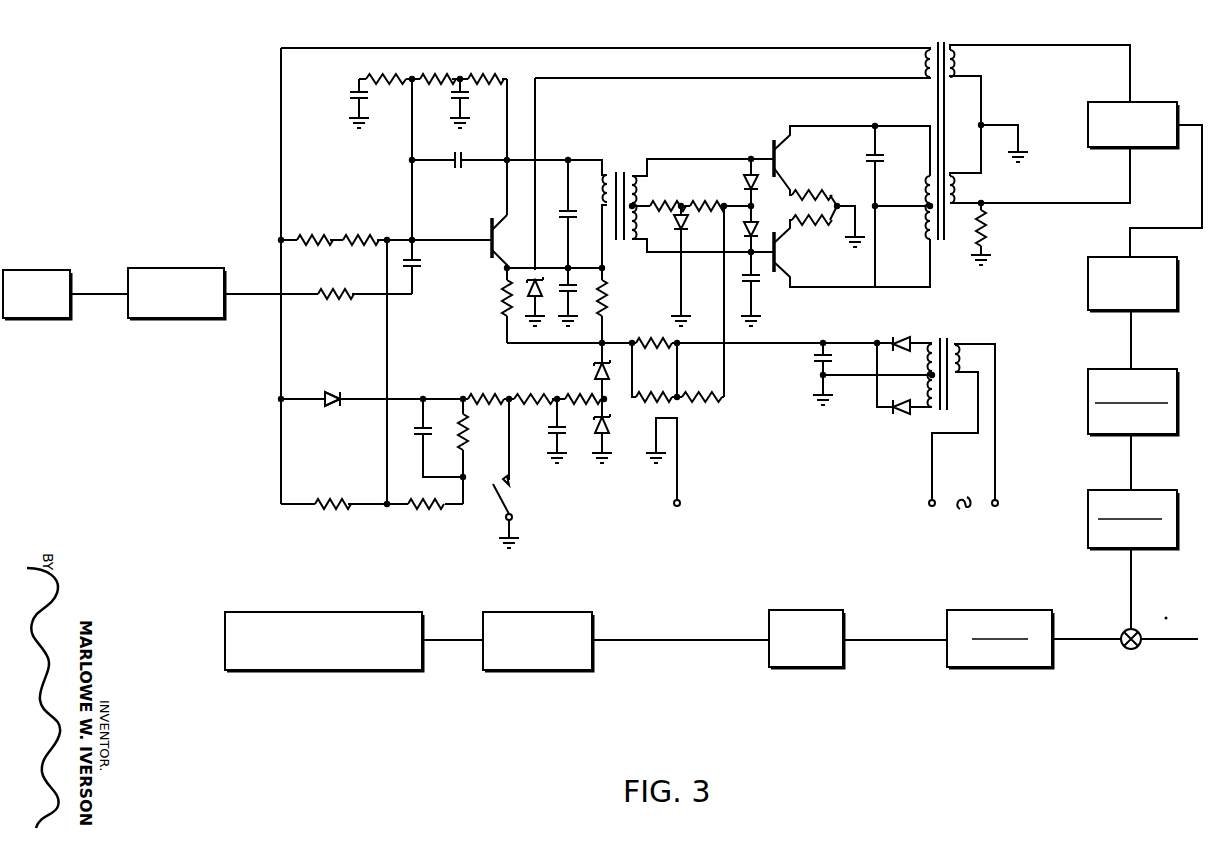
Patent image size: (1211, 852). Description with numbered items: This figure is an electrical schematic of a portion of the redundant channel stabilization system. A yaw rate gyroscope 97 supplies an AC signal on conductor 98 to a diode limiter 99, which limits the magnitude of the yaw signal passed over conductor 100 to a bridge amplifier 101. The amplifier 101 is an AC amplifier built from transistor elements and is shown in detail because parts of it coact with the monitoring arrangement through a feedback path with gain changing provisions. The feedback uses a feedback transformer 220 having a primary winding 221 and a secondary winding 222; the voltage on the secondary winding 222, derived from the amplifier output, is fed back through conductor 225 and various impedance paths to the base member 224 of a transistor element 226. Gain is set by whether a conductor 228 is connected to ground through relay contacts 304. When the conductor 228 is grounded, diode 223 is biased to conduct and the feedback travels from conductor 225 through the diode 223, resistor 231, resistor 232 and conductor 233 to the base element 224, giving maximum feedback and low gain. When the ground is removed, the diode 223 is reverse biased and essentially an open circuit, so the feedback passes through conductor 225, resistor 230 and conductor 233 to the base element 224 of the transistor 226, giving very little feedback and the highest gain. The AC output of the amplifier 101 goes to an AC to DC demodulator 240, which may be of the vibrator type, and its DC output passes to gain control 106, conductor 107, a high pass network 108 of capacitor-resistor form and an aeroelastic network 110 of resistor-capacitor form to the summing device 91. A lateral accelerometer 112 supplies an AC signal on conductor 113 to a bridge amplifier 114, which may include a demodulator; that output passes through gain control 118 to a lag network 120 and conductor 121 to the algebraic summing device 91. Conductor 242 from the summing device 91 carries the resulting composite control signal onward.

The yaw rate gyroscope 97 is at (50, 270).
The conductor 98 is at (115, 294).
The diode limiter 99 is at (180, 268).
The conductor 100 is at (275, 294).
The bridge amplifier 101 is at (764, 473).
The gain control 106 is at (1088, 291).
The conductor 107 is at (1131, 330).
The high pass network 108 is at (1118, 434).
The aeroelastic network 110 is at (1088, 493).
The lateral accelerometer 112 is at (318, 612).
The conductor 113 is at (463, 640).
The bridge amplifier 114 is at (537, 612).
The gain control 118 is at (790, 610).
The lag network 120 is at (1036, 610).
The conductor 121 is at (1098, 639).
The summing device 91 is at (1140, 647).
The conductor 242 is at (1183, 640).
The feedback transformer 220 is at (941, 34).
The primary winding 221 is at (955, 57).
The secondary winding 222 is at (928, 60).
The diode 223 is at (335, 390).
The base member 224 is at (490, 248).
The conductor 225 is at (584, 48).
The transistor element 226 is at (474, 210).
The conductor 228 is at (509, 440).
The resistor 230 is at (337, 509).
The resistor 231 is at (463, 437).
The resistor 232 is at (439, 506).
The conductor 233 is at (387, 355).
The AC to DC demodulator 240 is at (1143, 102).
The relay contacts 304 is at (500, 496).